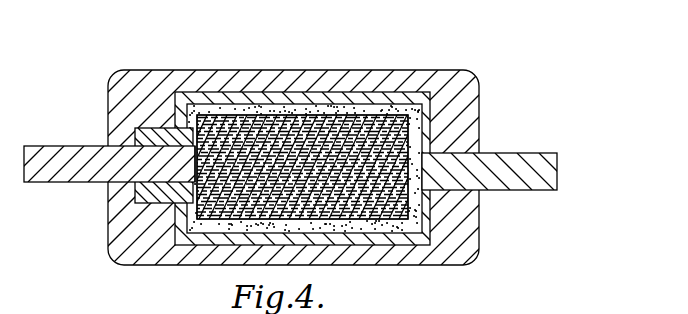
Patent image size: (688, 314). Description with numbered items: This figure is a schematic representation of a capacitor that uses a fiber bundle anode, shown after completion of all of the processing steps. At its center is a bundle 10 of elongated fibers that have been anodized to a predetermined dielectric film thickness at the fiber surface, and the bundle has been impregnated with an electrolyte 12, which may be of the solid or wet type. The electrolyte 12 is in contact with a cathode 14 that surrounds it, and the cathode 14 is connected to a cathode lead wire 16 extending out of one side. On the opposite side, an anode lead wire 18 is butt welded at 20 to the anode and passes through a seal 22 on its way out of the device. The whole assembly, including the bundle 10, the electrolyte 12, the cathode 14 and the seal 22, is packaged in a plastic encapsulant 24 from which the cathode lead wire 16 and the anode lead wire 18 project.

The bundle 10 is at (313, 113).
The electrolyte 12 is at (357, 104).
The cathode 14 is at (421, 100).
The cathode lead wire 16 is at (525, 162).
The anode lead wire 18 is at (82, 178).
The butt weld 20 is at (193, 166).
The seal 22 is at (153, 128).
The plastic encapsulant 24 is at (267, 86).